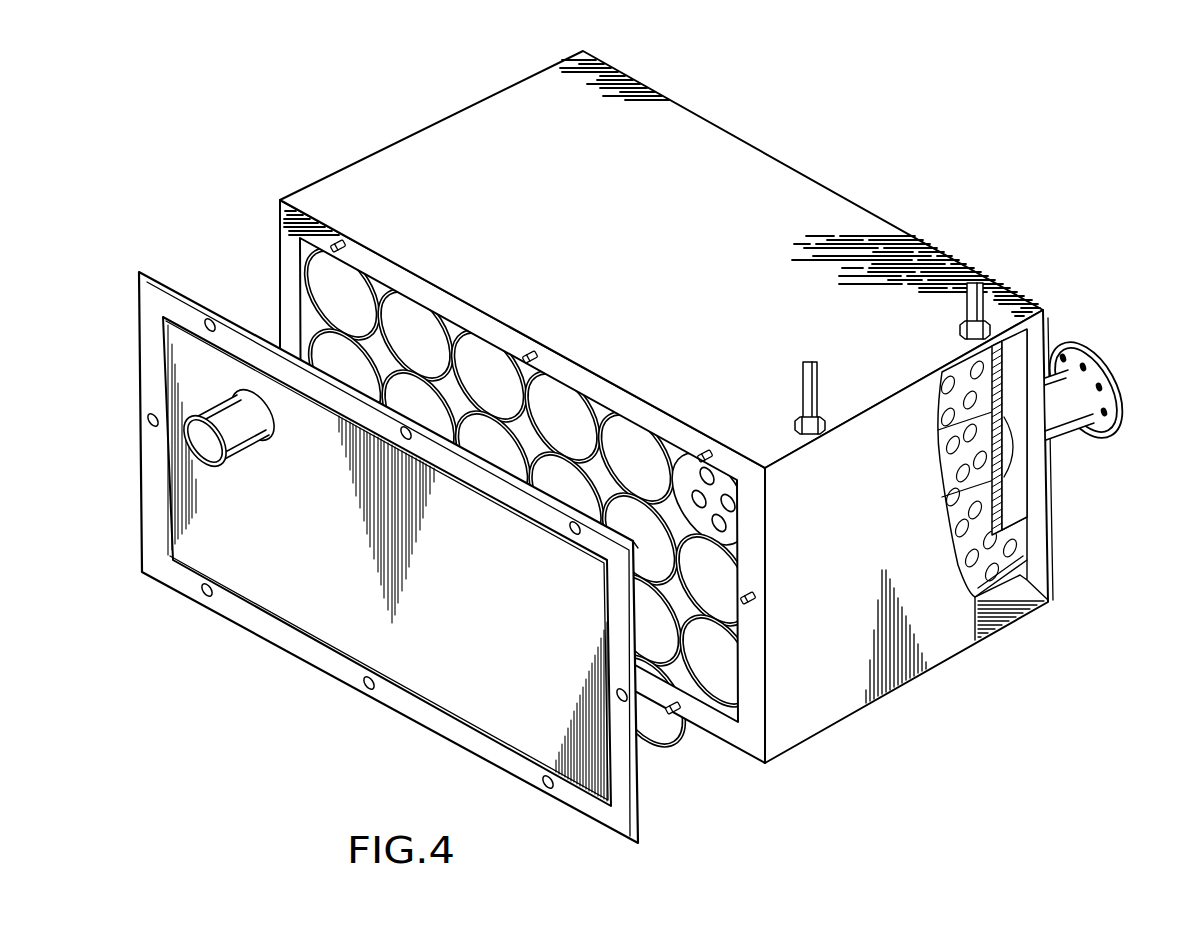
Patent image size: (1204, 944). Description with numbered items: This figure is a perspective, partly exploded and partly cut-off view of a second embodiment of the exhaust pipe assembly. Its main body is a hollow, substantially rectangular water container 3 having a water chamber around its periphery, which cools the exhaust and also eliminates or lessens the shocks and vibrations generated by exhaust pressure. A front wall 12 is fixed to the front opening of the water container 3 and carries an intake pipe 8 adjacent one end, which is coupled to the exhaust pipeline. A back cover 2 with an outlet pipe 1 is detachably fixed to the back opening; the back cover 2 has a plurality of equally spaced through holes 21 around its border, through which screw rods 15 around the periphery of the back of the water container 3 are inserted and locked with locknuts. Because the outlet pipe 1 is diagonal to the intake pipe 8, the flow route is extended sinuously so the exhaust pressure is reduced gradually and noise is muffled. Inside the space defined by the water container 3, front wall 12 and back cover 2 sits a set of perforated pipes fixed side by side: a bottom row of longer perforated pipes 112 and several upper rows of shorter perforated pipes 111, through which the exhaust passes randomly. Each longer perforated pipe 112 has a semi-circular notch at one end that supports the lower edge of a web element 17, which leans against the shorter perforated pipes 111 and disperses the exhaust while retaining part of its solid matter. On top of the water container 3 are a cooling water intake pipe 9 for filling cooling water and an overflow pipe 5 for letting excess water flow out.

The outlet pipe 1 is at (236, 400).
The back cover 2 is at (340, 615).
The through holes 21 is at (368, 690).
The water container 3 is at (910, 258).
The overflow pipe 5 is at (803, 373).
The intake pipe 8 is at (1073, 413).
The cooling water intake pipe 9 is at (985, 290).
The front wall 12 is at (1015, 355).
The screw rods 15 is at (667, 722).
The web element 17 is at (1000, 505).
The shorter perforated pipes 111 is at (732, 535).
The longer perforated pipes 112 is at (727, 693).